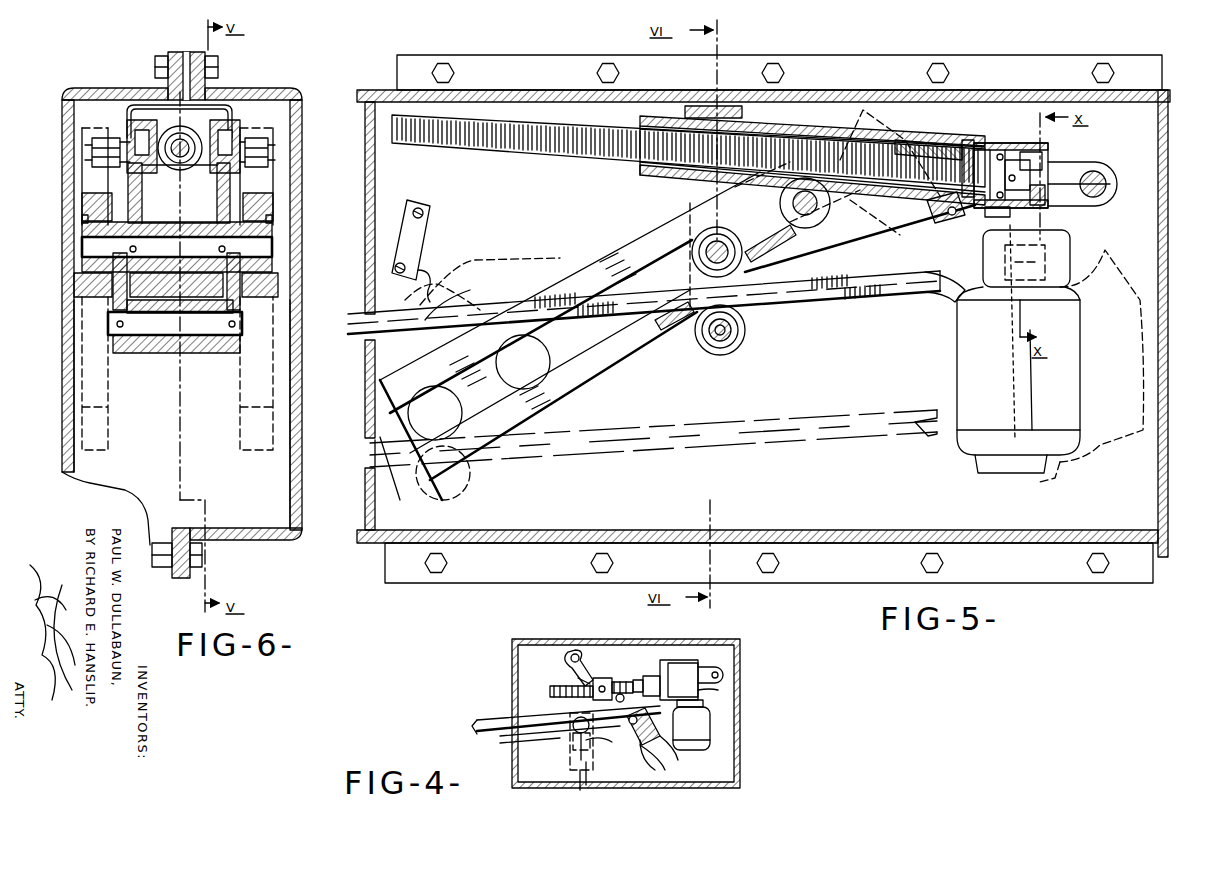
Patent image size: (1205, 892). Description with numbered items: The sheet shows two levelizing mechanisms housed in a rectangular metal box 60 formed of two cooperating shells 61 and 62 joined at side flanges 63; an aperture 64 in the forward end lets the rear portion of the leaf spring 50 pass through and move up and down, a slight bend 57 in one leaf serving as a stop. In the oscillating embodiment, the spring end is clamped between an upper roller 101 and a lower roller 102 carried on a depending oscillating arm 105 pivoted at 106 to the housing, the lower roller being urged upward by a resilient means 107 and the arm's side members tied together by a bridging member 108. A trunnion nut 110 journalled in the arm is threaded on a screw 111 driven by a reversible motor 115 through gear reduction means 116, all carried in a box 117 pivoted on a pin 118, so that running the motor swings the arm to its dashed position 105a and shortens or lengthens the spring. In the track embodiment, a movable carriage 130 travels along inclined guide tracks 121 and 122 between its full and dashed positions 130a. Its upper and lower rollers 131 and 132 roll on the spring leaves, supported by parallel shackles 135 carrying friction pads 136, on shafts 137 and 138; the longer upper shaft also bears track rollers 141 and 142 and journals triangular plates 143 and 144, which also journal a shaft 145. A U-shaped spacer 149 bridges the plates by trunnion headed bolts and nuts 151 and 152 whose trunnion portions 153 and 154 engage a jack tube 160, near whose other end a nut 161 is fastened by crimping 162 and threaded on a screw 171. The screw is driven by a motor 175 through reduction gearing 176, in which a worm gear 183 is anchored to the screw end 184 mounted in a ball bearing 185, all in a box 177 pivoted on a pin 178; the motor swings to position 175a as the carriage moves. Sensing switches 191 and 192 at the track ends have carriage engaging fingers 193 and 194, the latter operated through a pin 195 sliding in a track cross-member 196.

In FIG. 5, the leaf spring assembly 50 is at (382, 332).
In FIG. 4, the leaf spring assembly 50 is at (478, 718).
In FIG. 5, the bend 57 is at (915, 288).
In FIG. 4, the bend 57 is at (670, 758).
In FIG. 6, the metal box 60 is at (293, 540).
In FIG. 5, the metal box 60 is at (1166, 484).
In FIG. 4, the metal box 60 is at (742, 668).
In FIG. 6, the shell 61 is at (300, 420).
In FIG. 6, the shell 62 is at (63, 420).
In FIG. 6, the side flange 63 is at (205, 54).
In FIG. 5, the side flange 63 is at (505, 62).
In FIG. 5, the aperture 64 is at (366, 483).
In FIG. 4, the aperture 64 is at (520, 740).
In FIG. 4, the upper roller 101 is at (640, 678).
In FIG. 4, the lower roller 102 is at (624, 760).
In FIG. 4, the oscillating carriage or arm 105 is at (600, 680).
In FIG. 4, the dashed line position of oscillating arm 105a is at (586, 785).
In FIG. 4, the pivot 106 is at (577, 655).
In FIG. 4, the adjustable and/or resilient means 107 is at (640, 750).
In FIG. 4, the bridging member 108 is at (585, 673).
In FIG. 4, the trunnion nut 110 is at (608, 680).
In FIG. 4, the screw 111 is at (650, 678).
In FIG. 4, the reversible electric motor 115 is at (710, 725).
In FIG. 4, the gear reduction means 116 is at (688, 660).
In FIG. 4, the box 117 is at (718, 690).
In FIG. 4, the pin or stub shaft 118 is at (723, 672).
In FIG. 6, the guide track 121 is at (273, 205).
In FIG. 6, the guide track 122 is at (82, 200).
In FIG. 5, the guide track 122 is at (627, 362).
In FIG. 6, the movable shackle or carriage 130 is at (232, 175).
In FIG. 5, the movable shackle or carriage 130 is at (686, 185).
In FIG. 5, the dashed line position of carriage 130a is at (476, 300).
In FIG. 6, the upper leaf spring engaging roller 131 is at (182, 218).
In FIG. 5, the upper leaf spring engaging roller 131 is at (694, 262).
In FIG. 6, the lower leaf spring engaging roller 132 is at (175, 352).
In FIG. 5, the lower leaf spring engaging roller 132 is at (745, 335).
In FIG. 6, the shackle 135 is at (127, 308).
In FIG. 5, the shackle 135 is at (745, 310).
In FIG. 6, the friction engaging pad 136 is at (113, 275).
In FIG. 6, the upper shaft 137 is at (275, 248).
In FIG. 5, the upper shaft 137 is at (688, 240).
In FIG. 6, the lower shaft 138 is at (148, 350).
In FIG. 5, the lower shaft 138 is at (725, 345).
In FIG. 6, the track engaging roller 141 is at (275, 225).
In FIG. 6, the track engaging roller 142 is at (82, 232).
In FIG. 6, the triangular plate 143 is at (232, 190).
In FIG. 6, the triangular plate 144 is at (128, 185).
In FIG. 5, the triangular plate 144 is at (782, 226).
In FIG. 5, the shaft 145 is at (808, 215).
In FIG. 6, the U-shaped spacer member 149 is at (228, 118).
In FIG. 5, the U-shaped spacer member 149 is at (722, 106).
In FIG. 6, the trunnion headed bolt and nut 151 is at (238, 128).
In FIG. 6, the trunnion headed bolt and nut 152 is at (100, 140).
In FIG. 6, the trunnion portion 153 is at (172, 135).
In FIG. 6, the trunnion portion 154 is at (170, 170).
In FIG. 6, the jack tube 160 is at (190, 130).
In FIG. 5, the jack tube 160 is at (775, 135).
In FIG. 5, the nut 161 is at (972, 150).
In FIG. 5, the crimping 162 is at (928, 147).
In FIG. 6, the screw 171 is at (183, 165).
In FIG. 5, the screw 171 is at (538, 152).
In FIG. 5, the motor 175 is at (960, 338).
In FIG. 5, the dashed line position of motor 175a is at (1128, 296).
In FIG. 5, the gear reduction means 176 is at (1075, 252).
In FIG. 5, the box 177 is at (1090, 163).
In FIG. 5, the pin 178 is at (1106, 180).
In FIG. 5, the worm gear 183 is at (1050, 150).
In FIG. 5, the end of screw 184 is at (1025, 150).
In FIG. 5, the ball bearing 185 is at (1003, 212).
In FIG. 5, the sensing switch 191 is at (430, 213).
In FIG. 5, the sensing switch 192 is at (938, 218).
In FIG. 5, the carriage engaging finger 193 is at (430, 268).
In FIG. 5, the carriage engaging finger 194 is at (905, 150).
In FIG. 5, the carriage engaging pin 195 is at (872, 228).
In FIG. 5, the track cross-member 196 is at (893, 205).